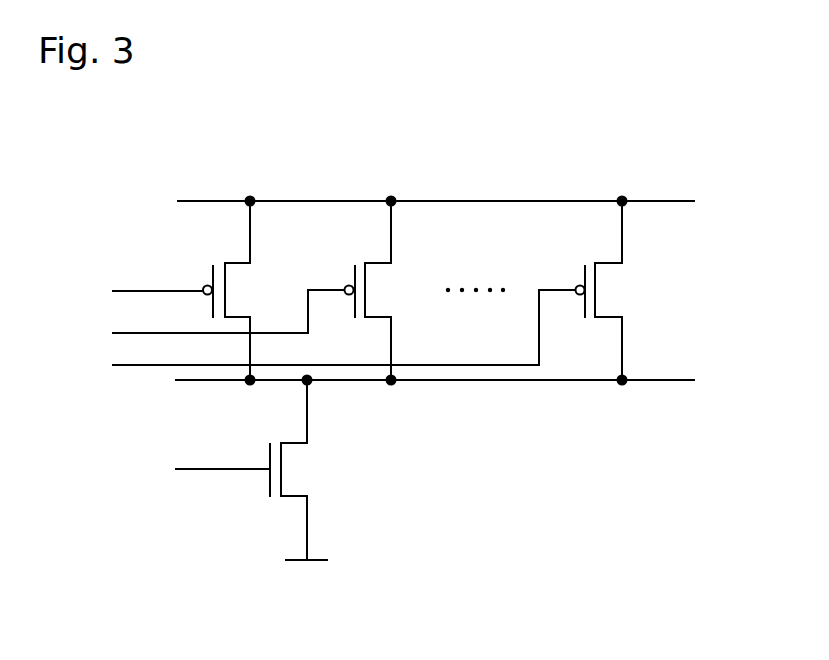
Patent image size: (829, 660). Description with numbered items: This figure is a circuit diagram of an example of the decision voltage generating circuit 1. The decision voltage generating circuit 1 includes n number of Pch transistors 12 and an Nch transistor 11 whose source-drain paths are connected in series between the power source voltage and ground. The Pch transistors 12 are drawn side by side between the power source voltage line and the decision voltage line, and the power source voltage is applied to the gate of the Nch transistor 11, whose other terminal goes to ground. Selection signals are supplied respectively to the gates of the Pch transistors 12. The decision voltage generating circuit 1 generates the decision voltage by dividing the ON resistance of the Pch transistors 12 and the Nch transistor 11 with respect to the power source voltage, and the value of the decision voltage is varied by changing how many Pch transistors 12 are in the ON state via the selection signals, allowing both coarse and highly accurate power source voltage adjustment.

The decision voltage generating circuit 1 is at (702, 628).
The Nch transistor 11 is at (307, 470).
The Pch transistors 12 is at (250, 285).